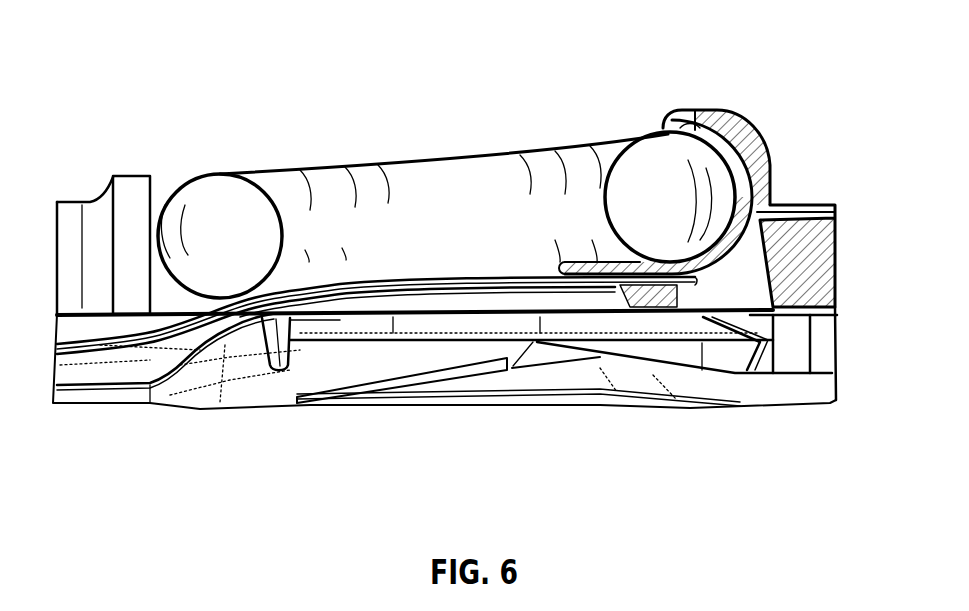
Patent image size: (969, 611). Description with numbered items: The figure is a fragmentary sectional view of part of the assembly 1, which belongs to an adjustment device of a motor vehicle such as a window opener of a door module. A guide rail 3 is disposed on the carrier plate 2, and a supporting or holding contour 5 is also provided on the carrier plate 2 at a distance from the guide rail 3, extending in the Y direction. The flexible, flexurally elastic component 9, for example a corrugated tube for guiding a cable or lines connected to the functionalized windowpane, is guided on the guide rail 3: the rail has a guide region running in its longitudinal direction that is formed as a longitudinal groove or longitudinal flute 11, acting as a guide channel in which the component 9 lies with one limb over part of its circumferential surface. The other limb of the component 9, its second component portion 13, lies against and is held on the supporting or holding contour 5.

The assembly 1 is at (668, 87).
The carrier plate 2 is at (228, 370).
The guide rail 3 is at (773, 172).
The supporting or holding contour 5 is at (122, 242).
The flexible component 9 is at (443, 213).
The longitudinal groove or longitudinal flute 11 is at (720, 137).
The second component portion 13 is at (226, 221).